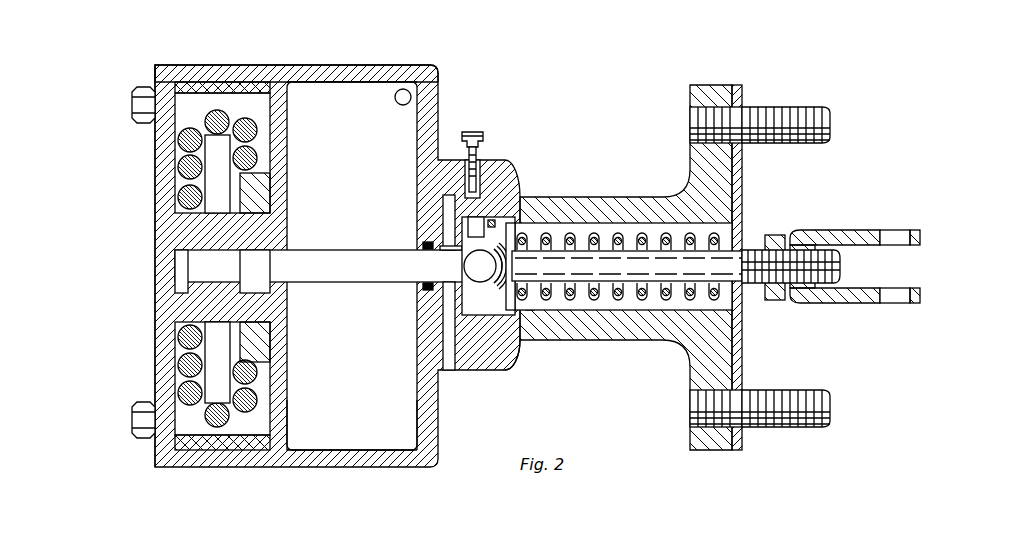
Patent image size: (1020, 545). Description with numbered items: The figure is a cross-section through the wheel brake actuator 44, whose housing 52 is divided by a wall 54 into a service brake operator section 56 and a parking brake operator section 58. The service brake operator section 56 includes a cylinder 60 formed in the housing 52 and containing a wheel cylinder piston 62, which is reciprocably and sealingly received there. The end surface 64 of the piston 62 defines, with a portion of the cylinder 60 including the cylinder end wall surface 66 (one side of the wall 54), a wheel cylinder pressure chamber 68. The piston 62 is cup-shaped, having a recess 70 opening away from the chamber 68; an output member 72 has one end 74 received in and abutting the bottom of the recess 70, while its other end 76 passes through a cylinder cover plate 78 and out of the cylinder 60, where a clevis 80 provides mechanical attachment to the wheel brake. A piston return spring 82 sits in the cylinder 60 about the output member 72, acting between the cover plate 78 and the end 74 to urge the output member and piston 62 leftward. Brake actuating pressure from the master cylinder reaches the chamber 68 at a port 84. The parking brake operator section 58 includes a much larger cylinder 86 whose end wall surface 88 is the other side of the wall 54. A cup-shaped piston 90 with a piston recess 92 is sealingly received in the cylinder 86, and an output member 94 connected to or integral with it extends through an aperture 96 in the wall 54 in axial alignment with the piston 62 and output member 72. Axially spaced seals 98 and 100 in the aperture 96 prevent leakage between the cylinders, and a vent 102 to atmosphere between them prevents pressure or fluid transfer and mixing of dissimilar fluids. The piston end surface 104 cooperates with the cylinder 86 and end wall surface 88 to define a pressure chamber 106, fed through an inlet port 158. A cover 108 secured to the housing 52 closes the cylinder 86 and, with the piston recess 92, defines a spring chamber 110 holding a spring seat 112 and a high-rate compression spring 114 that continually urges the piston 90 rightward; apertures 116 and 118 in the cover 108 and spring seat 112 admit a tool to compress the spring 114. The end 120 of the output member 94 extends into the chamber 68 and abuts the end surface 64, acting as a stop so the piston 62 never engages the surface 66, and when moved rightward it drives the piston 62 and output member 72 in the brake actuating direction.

The actuator 44 is at (161, 60).
The housing 52 is at (432, 62).
The wall 54 is at (440, 290).
The service brake operator section 56 is at (599, 194).
The parking brake operator section 58 is at (281, 58).
The cylinder 60 is at (640, 233).
The wheel cylinder piston 62 is at (512, 235).
The end surface 64 is at (475, 240).
The cylinder end wall surface 66 is at (465, 322).
The wheel cylinder pressure chamber 68 is at (472, 190).
The recess 70 is at (592, 318).
The output member 72 is at (760, 252).
The end 74 is at (500, 255).
The end 76 is at (842, 270).
The cylinder cover plate 78 is at (742, 175).
The clevis 80 is at (845, 230).
The piston return spring 82 is at (748, 298).
The port 84 is at (525, 350).
The cylinder 86 is at (343, 90).
The end wall surface 88 is at (418, 392).
The piston 90 is at (285, 400).
The piston recess 92 is at (220, 93).
The output member 94 is at (355, 270).
The aperture 96 is at (418, 260).
The seal 98 is at (445, 248).
The seal 100 is at (440, 232).
The vent 102 is at (450, 362).
The piston end surface 104 is at (288, 222).
The pressure chamber 106 is at (415, 432).
The cover 108 is at (172, 360).
The spring chamber 110 is at (160, 108).
The spring seat 112 is at (268, 190).
The spring 114 is at (178, 132).
The aperture 116 is at (176, 262).
The aperture 118 is at (178, 275).
The end 120 is at (510, 262).
The inlet port 158 is at (404, 90).